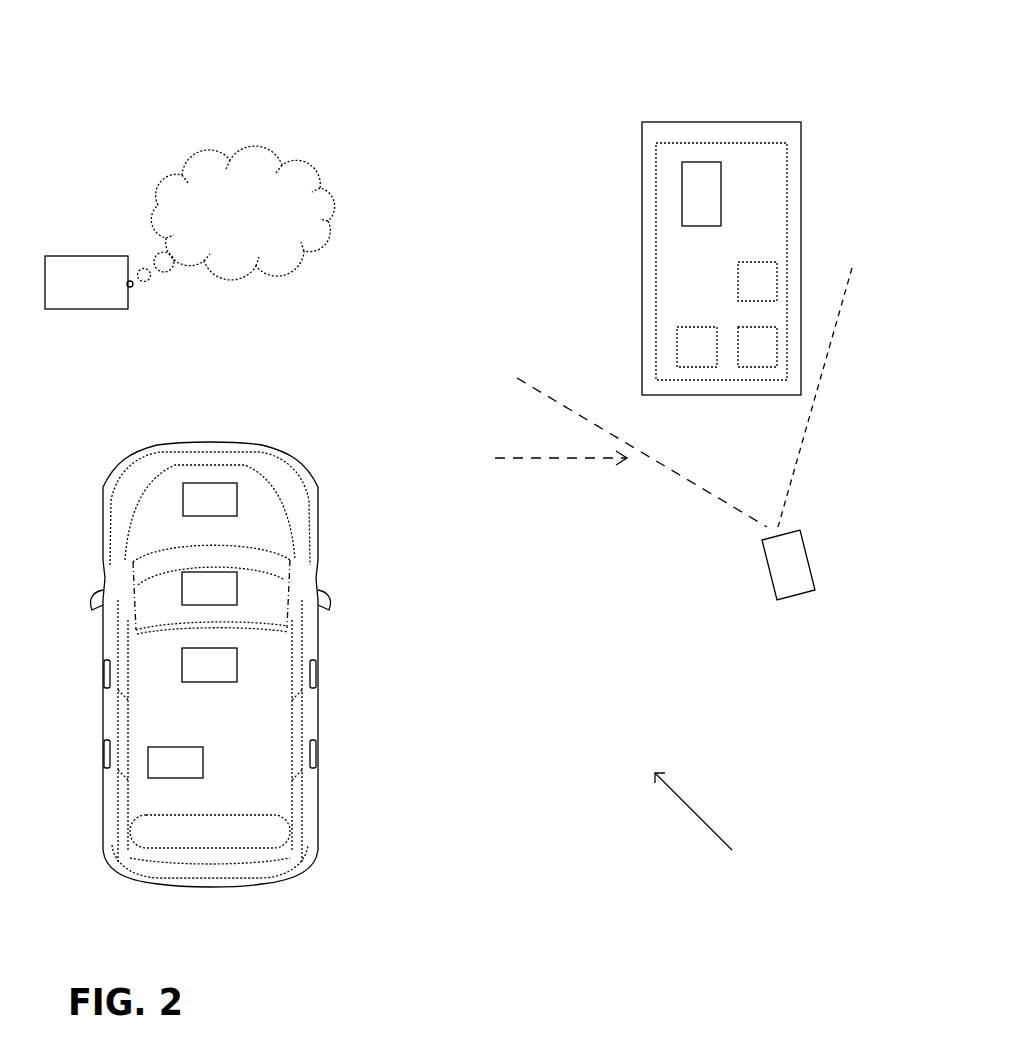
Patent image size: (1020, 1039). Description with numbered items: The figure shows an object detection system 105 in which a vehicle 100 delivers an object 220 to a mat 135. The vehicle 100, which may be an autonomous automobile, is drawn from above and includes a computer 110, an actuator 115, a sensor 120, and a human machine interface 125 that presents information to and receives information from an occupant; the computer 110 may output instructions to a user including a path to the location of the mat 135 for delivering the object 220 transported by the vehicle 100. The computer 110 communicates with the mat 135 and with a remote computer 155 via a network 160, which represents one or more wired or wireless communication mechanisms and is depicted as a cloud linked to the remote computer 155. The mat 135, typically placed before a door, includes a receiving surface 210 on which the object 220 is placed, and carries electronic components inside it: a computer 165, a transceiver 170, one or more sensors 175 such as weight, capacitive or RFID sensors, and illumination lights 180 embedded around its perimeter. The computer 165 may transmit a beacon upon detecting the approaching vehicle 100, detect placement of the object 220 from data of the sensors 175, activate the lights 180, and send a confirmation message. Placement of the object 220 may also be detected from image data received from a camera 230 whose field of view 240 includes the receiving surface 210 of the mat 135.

The vehicle 100 is at (232, 846).
The object detection system 105 is at (717, 826).
The computer 110 is at (205, 765).
The actuator 115 is at (237, 496).
The sensor 120 is at (237, 667).
The human machine interface 125 is at (237, 590).
The mat 135 is at (645, 193).
The remote computer 155 is at (86, 282).
The network 160 is at (231, 216).
The computer 165 is at (672, 340).
The transceiver 170 is at (747, 322).
The sensor 175 is at (760, 260).
The illumination light 180 is at (720, 143).
The receiving surface 210 is at (778, 199).
The object 220 is at (700, 163).
The camera 230 is at (773, 582).
The field of view 240 is at (533, 458).